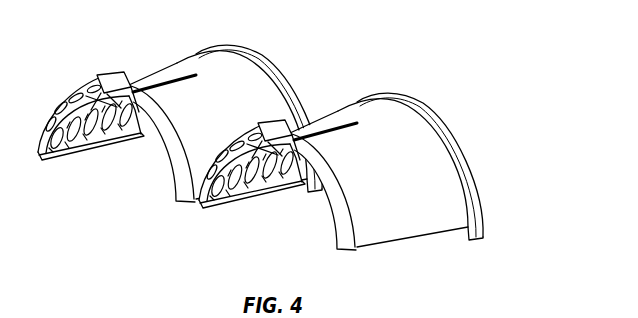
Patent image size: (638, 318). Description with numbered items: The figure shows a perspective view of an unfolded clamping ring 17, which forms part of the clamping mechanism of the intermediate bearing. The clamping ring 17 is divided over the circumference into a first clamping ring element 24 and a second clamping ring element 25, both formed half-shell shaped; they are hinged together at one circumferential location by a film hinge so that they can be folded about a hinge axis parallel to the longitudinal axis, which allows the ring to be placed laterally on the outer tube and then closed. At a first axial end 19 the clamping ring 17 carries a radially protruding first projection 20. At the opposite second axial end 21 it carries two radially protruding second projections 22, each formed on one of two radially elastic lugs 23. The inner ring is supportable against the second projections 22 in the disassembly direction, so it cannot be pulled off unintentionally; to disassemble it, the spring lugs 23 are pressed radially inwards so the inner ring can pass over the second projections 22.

The clamping ring 17 is at (456, 124).
The first axial end 19 is at (480, 187).
The first projection 20 is at (410, 101).
The second axial end 21 is at (323, 227).
The second projection 22 is at (110, 78).
The radially elastic lug 23 is at (148, 72).
The first clamping ring element 24 is at (130, 153).
The second clamping ring element 25 is at (277, 210).